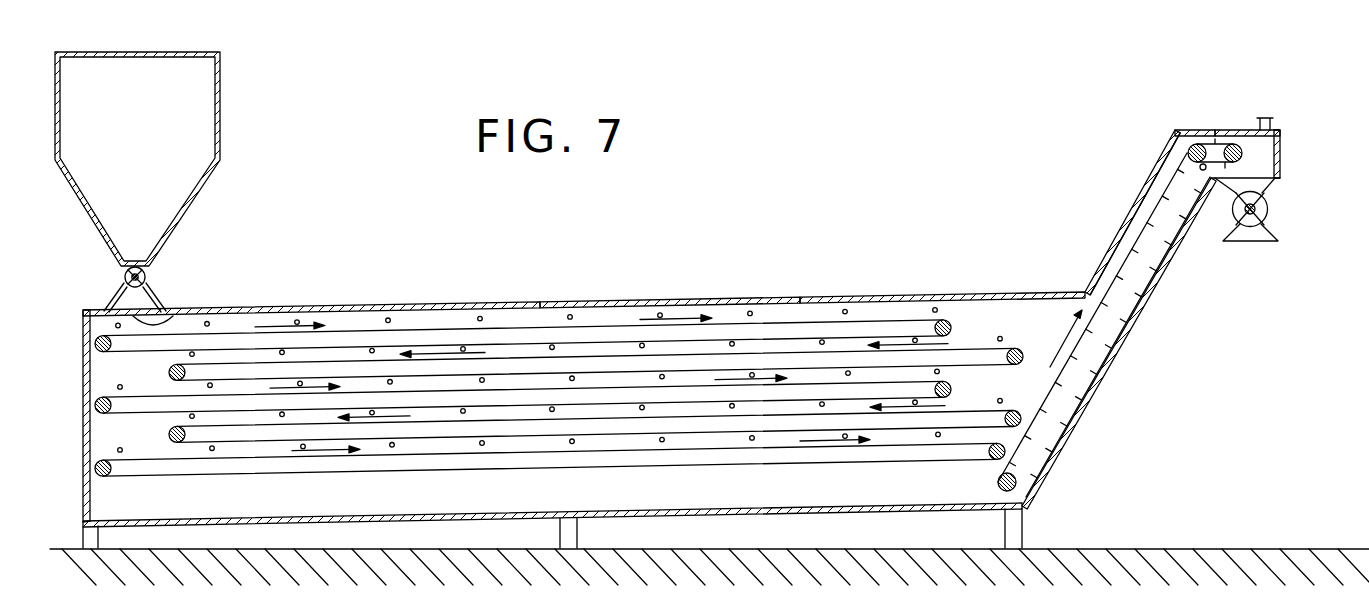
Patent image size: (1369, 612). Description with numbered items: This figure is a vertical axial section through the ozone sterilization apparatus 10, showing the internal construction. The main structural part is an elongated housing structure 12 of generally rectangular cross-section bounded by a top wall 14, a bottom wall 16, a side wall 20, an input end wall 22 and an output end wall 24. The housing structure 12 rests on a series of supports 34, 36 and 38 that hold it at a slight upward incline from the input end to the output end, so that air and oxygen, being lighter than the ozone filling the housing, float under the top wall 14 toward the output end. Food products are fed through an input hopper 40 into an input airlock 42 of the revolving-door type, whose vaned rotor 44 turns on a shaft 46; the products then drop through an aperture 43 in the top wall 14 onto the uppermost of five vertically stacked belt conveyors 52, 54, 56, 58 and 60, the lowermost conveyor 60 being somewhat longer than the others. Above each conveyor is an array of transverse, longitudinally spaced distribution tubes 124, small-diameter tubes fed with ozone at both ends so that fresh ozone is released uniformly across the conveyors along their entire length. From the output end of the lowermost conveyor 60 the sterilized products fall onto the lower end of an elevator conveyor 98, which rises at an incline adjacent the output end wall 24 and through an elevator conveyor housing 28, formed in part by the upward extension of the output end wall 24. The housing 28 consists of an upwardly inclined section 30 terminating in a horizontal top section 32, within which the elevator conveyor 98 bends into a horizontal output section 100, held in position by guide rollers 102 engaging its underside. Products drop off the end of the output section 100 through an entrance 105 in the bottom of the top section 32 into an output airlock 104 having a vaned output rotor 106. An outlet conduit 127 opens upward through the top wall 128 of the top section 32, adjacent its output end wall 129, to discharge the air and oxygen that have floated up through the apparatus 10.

The ozone sterilization apparatus 10 is at (701, 329).
The elongated housing structure 12 is at (527, 395).
The top wall 14 is at (610, 300).
The bottom wall 16 is at (662, 513).
The side wall 20 is at (988, 298).
The input end wall 22 is at (83, 425).
The output end wall 24 is at (1081, 412).
The elevator conveyor housing 28 is at (1156, 163).
The upwardly inclined section 30 is at (1140, 196).
The horizontal top section 32 is at (1206, 128).
The support 34 is at (83, 530).
The support 36 is at (560, 537).
The support 38 is at (1005, 537).
The input hopper 40 is at (221, 135).
The input airlock 42 is at (164, 273).
The aperture 43 is at (173, 316).
The vaned rotor 44 is at (119, 281).
The shaft 46 is at (134, 267).
The conveyor 52 is at (215, 333).
The conveyor 54 is at (243, 363).
The conveyor 56 is at (345, 393).
The conveyor 58 is at (205, 425).
The lowermost conveyor 60 is at (142, 460).
The elevator conveyor 98 is at (1121, 268).
The horizontal output section 100 is at (1227, 146).
The guide rollers 102 is at (1203, 172).
The output airlock 104 is at (1272, 208).
The entrance 105 is at (1262, 182).
The vaned output rotor 106 is at (1248, 239).
The distribution tubes 124 is at (818, 330).
The outlet conduit 127 is at (1272, 122).
The top wall 128 is at (1195, 128).
The output end wall 129 is at (1281, 150).